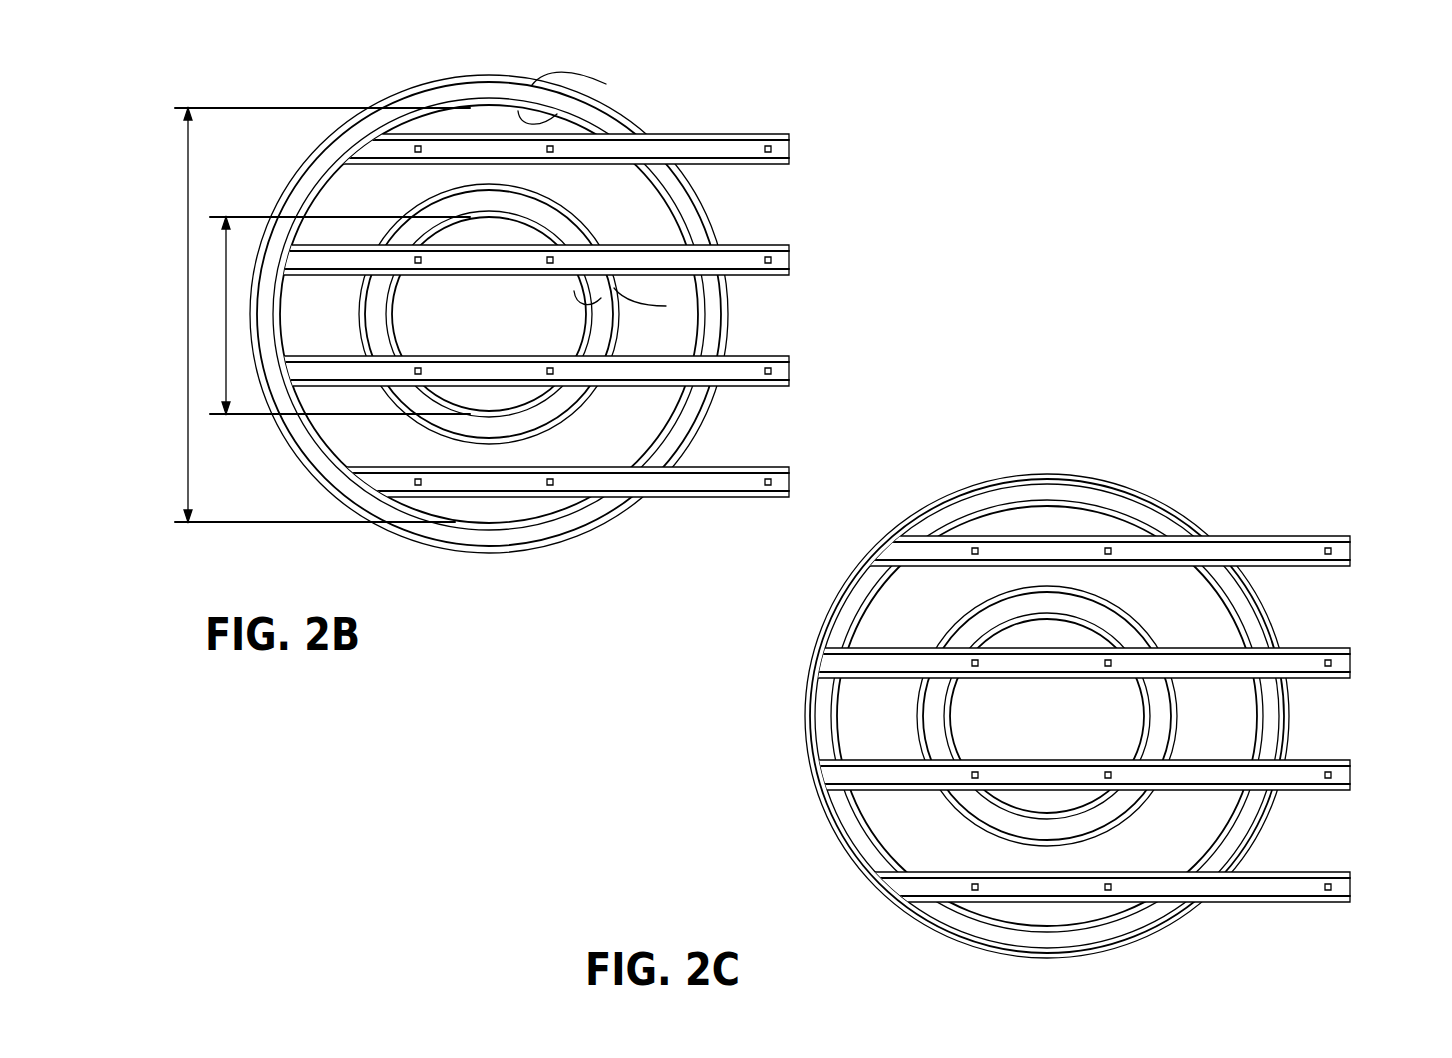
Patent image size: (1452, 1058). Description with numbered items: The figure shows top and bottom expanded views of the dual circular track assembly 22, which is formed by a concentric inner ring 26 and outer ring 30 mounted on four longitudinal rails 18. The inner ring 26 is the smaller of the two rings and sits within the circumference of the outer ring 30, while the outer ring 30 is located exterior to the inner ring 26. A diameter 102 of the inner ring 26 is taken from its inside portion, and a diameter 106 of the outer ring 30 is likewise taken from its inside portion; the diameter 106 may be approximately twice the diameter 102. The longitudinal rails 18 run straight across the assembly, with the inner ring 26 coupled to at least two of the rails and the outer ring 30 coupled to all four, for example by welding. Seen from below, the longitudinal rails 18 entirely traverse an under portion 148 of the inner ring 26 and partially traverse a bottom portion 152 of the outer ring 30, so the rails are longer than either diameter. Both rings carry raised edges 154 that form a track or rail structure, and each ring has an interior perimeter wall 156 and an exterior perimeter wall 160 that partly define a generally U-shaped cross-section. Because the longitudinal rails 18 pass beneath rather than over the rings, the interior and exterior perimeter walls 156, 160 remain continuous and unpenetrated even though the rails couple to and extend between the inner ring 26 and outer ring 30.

In FIG. 2B, the longitudinal rails 18 is at (738, 265).
In FIG. 2C, the longitudinal rails 18 is at (1310, 660).
In FIG. 2B, the dual circular track assembly 22 is at (580, 336).
In FIG. 2C, the dual circular track assembly 22 is at (1052, 712).
In FIG. 2B, the inner ring 26 is at (558, 198).
In FIG. 2C, the inner ring 26 is at (1110, 592).
In FIG. 2B, the outer ring 30 is at (489, 314).
In FIG. 2C, the outer ring 30 is at (812, 628).
In FIG. 2B, the diameter of the inner ring 102 is at (335, 315).
In FIG. 2B, the diameter of the outer ring 106 is at (320, 315).
In FIG. 2C, the under portion of the inner ring 148 is at (982, 808).
In FIG. 2C, the bottom portion of the outer ring 152 is at (812, 716).
In FIG. 2B, the raised edges 154 is at (545, 118).
In FIG. 2B, the interior perimeter wall 156 is at (585, 318).
In FIG. 2C, the interior perimeter wall 156 is at (1150, 722).
In FIG. 2B, the exterior perimeter wall 160 is at (562, 420).
In FIG. 2C, the exterior perimeter wall 160 is at (1120, 832).